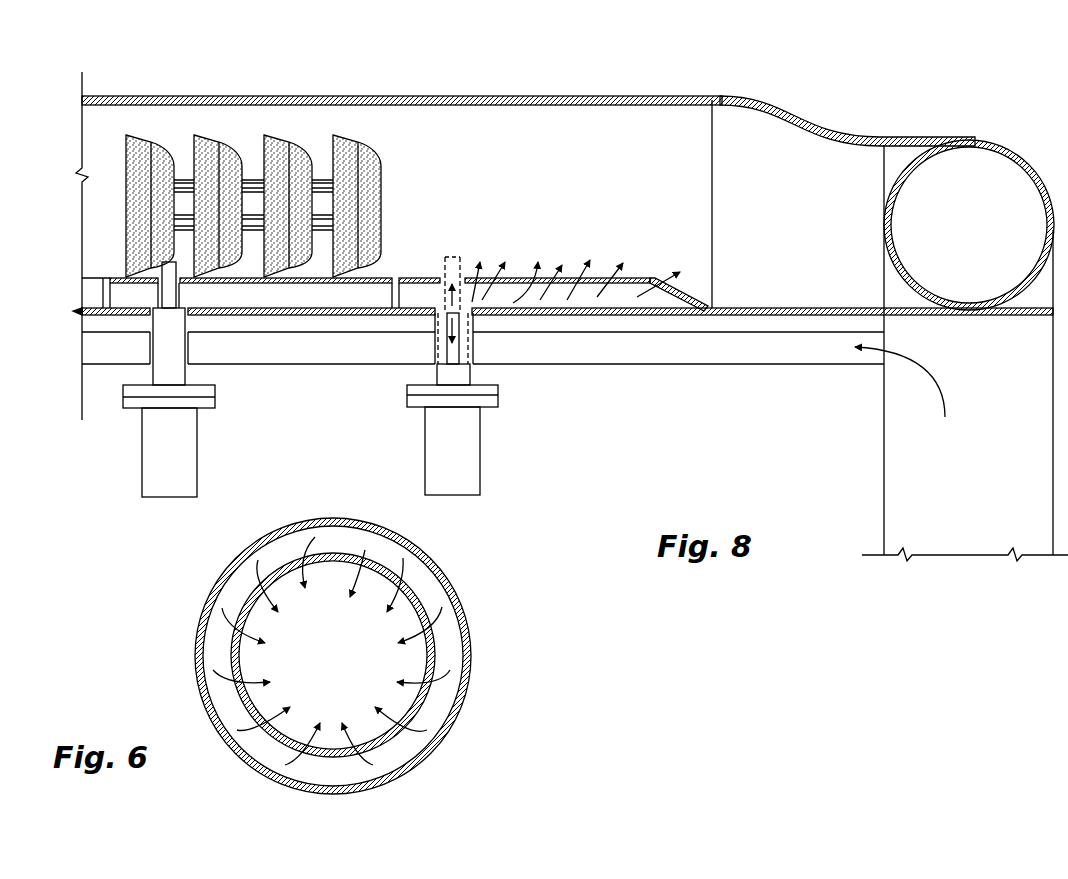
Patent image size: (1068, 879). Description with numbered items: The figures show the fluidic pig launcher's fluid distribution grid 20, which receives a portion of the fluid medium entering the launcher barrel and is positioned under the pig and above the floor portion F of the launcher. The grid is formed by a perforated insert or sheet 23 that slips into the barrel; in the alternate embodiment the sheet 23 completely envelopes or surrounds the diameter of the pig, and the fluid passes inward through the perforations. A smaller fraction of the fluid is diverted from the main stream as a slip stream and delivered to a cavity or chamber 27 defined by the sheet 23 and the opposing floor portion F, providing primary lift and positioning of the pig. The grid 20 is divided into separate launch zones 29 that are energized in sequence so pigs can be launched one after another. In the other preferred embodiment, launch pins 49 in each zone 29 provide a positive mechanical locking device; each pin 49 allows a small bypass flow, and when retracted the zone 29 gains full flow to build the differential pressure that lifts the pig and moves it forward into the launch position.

In FIG. 6, the fluid distribution grid 20 is at (186, 683).
In FIG. 8, the perforated insert or sheet 23 is at (547, 281).
In FIG. 6, the perforated insert or sheet 23 is at (207, 708).
In FIG. 8, the cavity or chamber 27 is at (613, 297).
In FIG. 8, the zone 29 is at (284, 292).
In FIG. 8, the launch pin 49 is at (165, 290).
In FIG. 8, the floor portion F is at (548, 302).